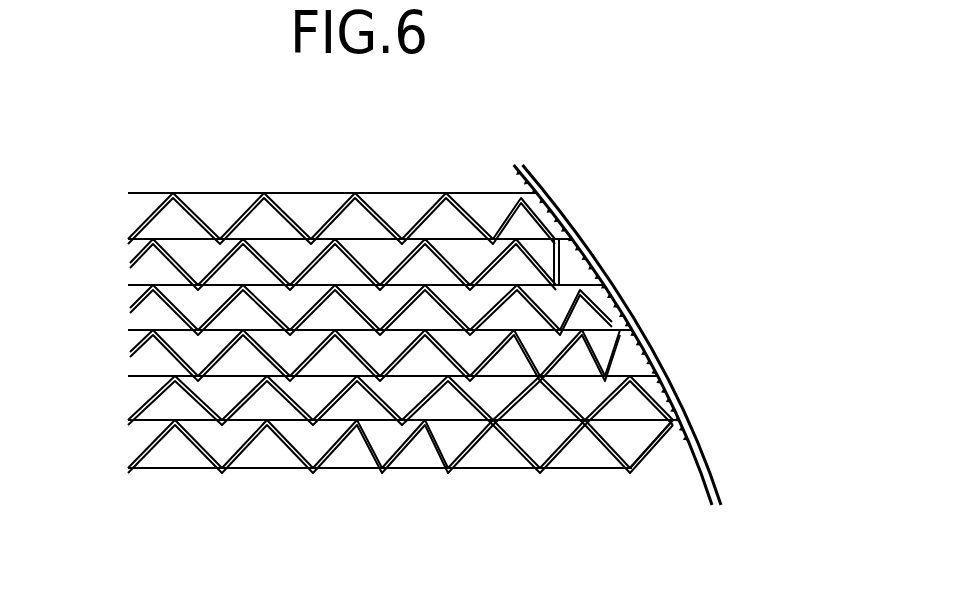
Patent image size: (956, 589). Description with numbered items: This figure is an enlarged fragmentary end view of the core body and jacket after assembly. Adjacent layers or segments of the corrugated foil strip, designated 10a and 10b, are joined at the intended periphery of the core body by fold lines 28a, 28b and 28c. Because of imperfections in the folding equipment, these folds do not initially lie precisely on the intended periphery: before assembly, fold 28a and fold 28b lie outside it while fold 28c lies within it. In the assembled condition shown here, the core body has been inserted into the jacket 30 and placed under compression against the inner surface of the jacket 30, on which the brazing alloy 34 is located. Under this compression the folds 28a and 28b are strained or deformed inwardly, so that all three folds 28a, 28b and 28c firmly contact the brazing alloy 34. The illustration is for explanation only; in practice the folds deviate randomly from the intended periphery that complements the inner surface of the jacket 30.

The corrugated strip layer 10a is at (375, 200).
The corrugated strip layer 10b is at (158, 258).
The fold line 28a is at (562, 228).
The fold line 28b is at (640, 328).
The fold line 28c is at (668, 423).
The jacket 30 is at (678, 393).
The brazing alloy 34 is at (622, 295).